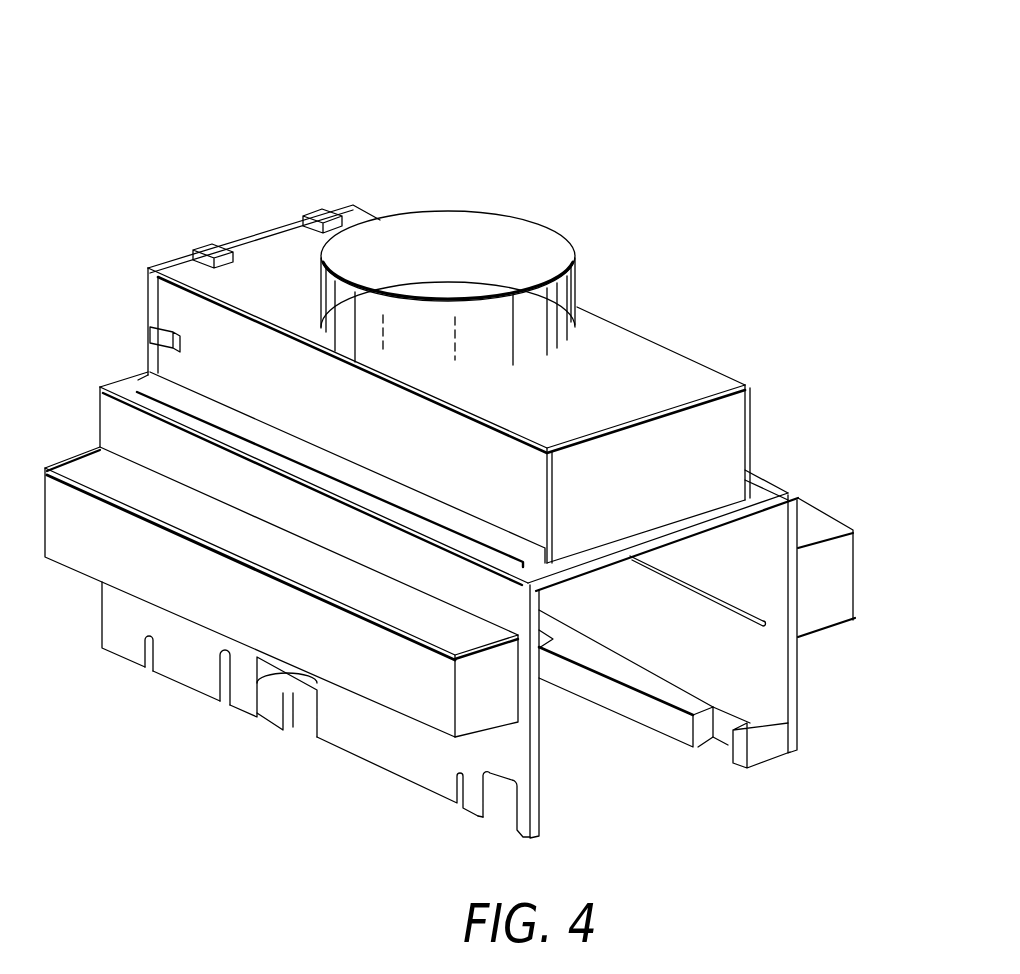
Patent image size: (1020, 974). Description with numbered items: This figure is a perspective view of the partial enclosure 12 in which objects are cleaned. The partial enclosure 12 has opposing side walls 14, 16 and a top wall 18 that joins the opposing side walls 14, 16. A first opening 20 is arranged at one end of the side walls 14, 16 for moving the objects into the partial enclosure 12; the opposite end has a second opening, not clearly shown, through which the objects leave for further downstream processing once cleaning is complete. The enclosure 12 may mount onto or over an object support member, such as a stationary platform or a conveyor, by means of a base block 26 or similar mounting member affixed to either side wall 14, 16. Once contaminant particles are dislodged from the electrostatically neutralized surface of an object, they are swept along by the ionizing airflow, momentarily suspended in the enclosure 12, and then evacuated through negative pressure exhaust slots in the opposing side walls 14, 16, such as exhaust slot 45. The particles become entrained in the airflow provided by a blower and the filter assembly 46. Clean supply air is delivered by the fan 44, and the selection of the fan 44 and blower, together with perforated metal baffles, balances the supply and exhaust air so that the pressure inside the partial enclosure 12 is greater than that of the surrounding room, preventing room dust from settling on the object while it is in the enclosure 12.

The partial enclosure 12 is at (683, 105).
The side wall 14 is at (799, 679).
The side wall 16 is at (530, 745).
The top wall 18 is at (750, 515).
The first opening 20 is at (635, 778).
The base block 26 is at (773, 760).
The fan 44 is at (577, 277).
The negative pressure exhaust slot 45 is at (738, 603).
The filter assembly 46 is at (747, 422).